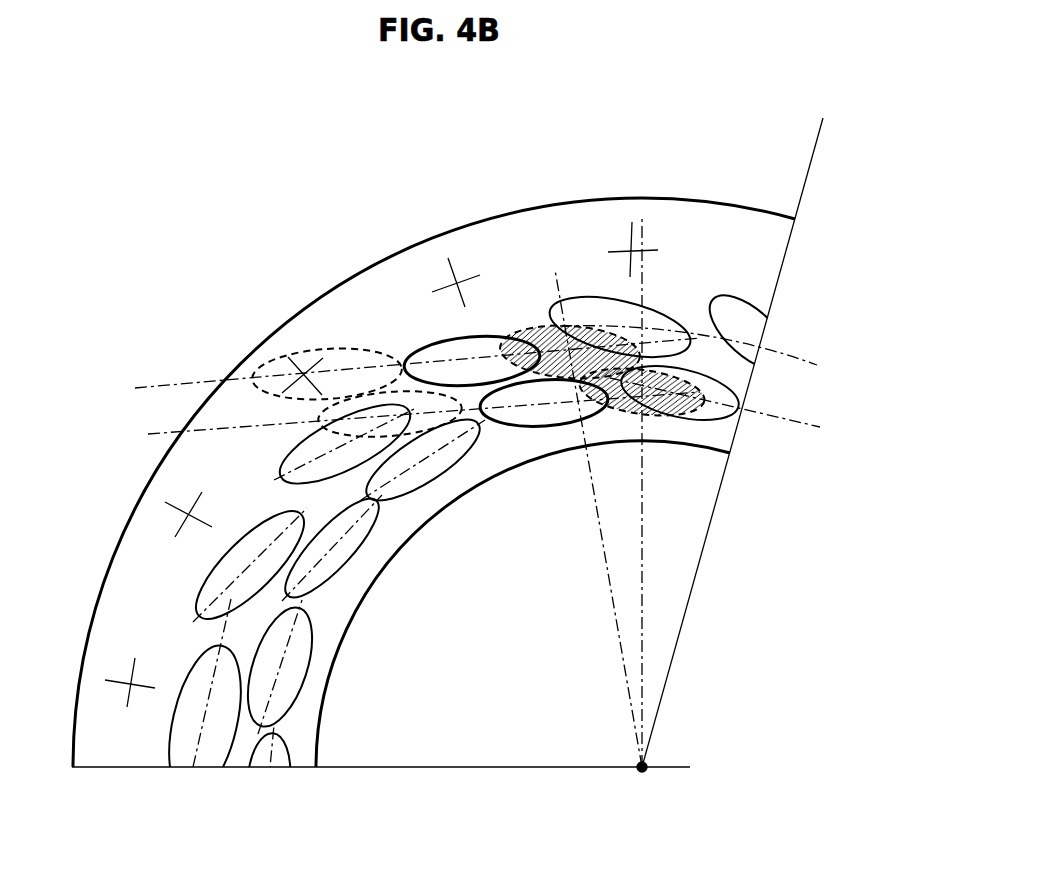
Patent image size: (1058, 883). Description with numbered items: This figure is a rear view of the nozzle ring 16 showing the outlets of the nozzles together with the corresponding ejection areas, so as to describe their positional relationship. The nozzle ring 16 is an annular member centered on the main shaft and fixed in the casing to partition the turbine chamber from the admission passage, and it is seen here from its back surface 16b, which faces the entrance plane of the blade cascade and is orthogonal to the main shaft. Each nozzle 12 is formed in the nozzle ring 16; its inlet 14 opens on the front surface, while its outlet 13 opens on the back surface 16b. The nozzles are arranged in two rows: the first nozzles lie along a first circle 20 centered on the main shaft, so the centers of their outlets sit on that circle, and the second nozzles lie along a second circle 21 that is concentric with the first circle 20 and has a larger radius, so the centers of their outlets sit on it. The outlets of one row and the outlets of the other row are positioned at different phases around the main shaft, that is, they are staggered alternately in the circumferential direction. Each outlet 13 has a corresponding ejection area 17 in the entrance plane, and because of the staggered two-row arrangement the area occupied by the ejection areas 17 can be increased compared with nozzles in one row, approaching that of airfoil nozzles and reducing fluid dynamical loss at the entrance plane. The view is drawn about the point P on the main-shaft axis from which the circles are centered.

The nozzle 12 is at (260, 423).
The outlet 13 is at (642, 767).
The inlet 14 is at (358, 392).
The nozzle ring 16 is at (674, 202).
The back surface 16b is at (729, 228).
The ejection area 17 is at (642, 767).
The 1st circle 20 is at (790, 414).
The 2nd circle 21 is at (803, 358).
The apex point P is at (645, 765).